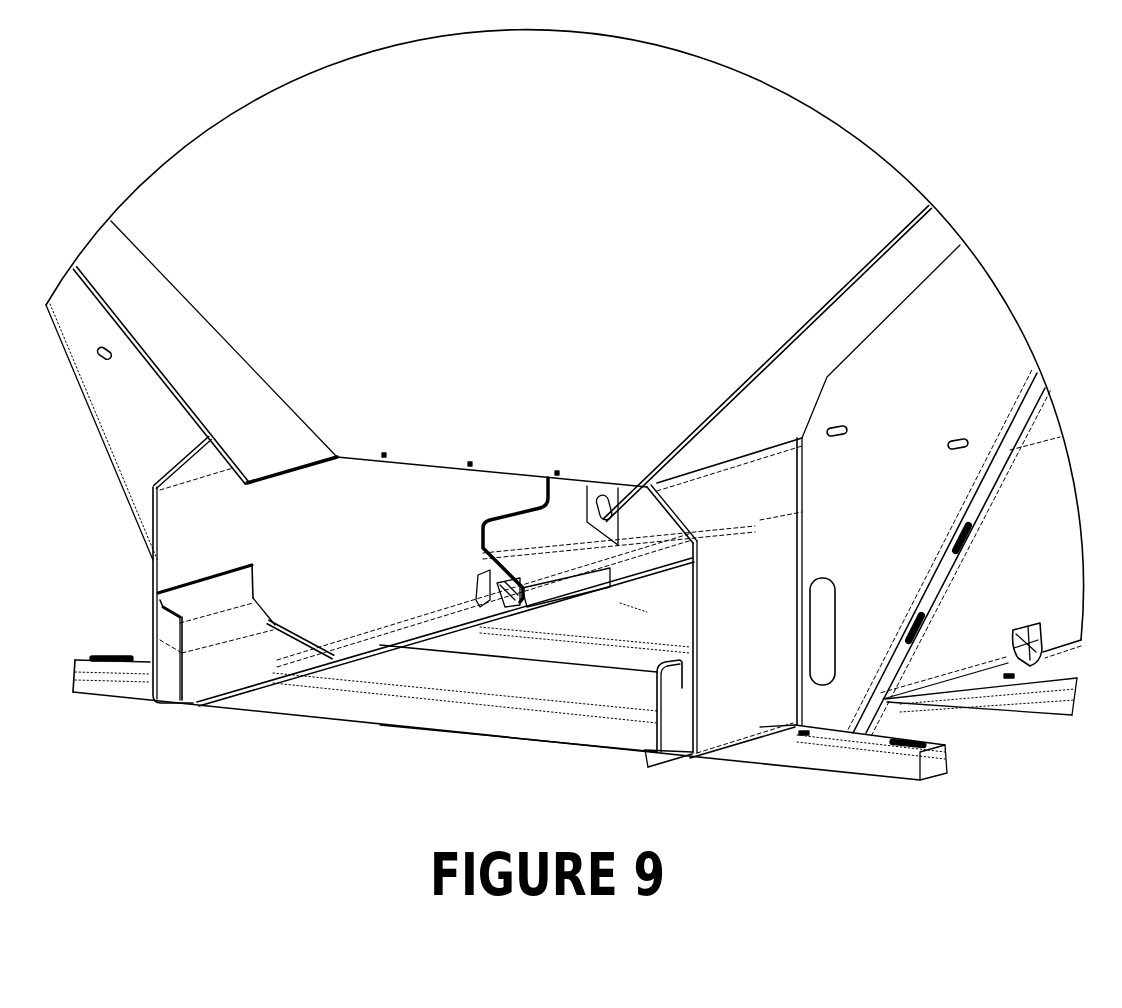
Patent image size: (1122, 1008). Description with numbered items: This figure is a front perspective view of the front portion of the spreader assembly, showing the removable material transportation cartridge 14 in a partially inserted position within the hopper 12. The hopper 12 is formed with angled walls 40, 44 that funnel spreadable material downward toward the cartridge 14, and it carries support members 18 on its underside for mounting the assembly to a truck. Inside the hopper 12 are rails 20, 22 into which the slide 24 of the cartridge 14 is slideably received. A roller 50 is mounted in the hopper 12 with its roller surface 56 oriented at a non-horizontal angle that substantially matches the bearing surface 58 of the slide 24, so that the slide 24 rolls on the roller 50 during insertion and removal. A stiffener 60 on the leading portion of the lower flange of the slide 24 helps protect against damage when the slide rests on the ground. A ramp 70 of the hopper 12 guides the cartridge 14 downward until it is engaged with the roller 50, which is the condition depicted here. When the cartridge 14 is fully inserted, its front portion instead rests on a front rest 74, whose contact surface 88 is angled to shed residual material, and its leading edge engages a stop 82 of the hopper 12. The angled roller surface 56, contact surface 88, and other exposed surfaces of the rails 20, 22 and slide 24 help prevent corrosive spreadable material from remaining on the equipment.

The hopper 12 is at (764, 88).
The removable material transportation cartridge 14 is at (643, 610).
The support members 18 is at (893, 785).
The rail 20 is at (254, 551).
The rail 22 is at (758, 590).
The slide 24 is at (510, 513).
The angled wall 40 is at (563, 238).
The angled wall 44 is at (797, 390).
The roller 50 is at (478, 615).
The roller surface 56 is at (485, 588).
The bearing surface 58 is at (482, 562).
The stiffener 60 is at (553, 607).
The ramp 70 is at (303, 627).
The front rest 74 is at (183, 673).
The stop 82 is at (163, 607).
The contact surface 88 is at (225, 622).